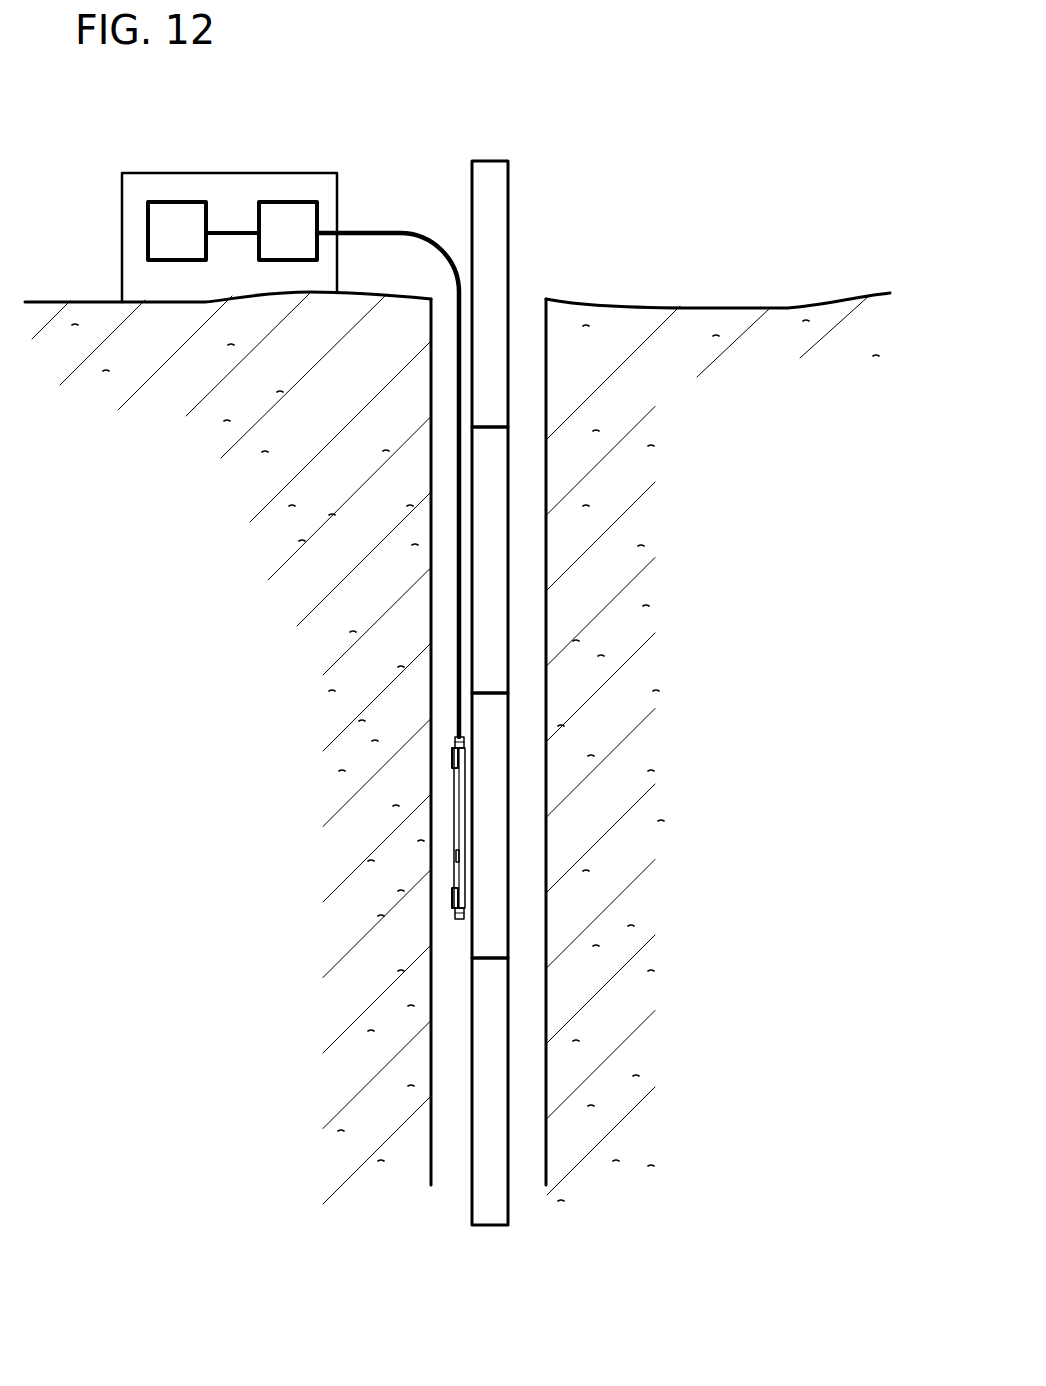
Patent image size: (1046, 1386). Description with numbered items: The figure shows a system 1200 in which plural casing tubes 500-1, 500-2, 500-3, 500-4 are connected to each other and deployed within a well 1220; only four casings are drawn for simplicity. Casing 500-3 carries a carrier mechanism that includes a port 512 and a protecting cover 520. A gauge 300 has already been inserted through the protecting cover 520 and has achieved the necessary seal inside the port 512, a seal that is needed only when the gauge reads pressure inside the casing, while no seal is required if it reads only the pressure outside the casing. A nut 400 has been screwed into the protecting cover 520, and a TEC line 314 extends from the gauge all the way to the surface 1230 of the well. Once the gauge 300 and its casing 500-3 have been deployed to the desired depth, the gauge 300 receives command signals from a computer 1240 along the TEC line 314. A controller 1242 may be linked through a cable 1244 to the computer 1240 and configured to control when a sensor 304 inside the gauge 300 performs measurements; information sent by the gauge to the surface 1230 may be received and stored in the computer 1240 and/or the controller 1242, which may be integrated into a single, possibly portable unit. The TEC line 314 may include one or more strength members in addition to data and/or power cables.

The system 1200 is at (672, 74).
The computer 1240 is at (160, 202).
The controller 1242 is at (287, 202).
The cable 1244 is at (229, 231).
The surface 1230 is at (788, 308).
The well 1220 is at (534, 550).
The casing tube 500-1 is at (508, 395).
The casing tube 500-2 is at (508, 602).
The casing tube 500-3 is at (508, 845).
The casing tube 500-4 is at (508, 1032).
The TEC line 314 is at (457, 655).
The nut 400 is at (454, 740).
The protecting cover 520 is at (453, 758).
The gauge 300 is at (347, 836).
The sensor 304 is at (455, 857).
The port 512 is at (453, 900).